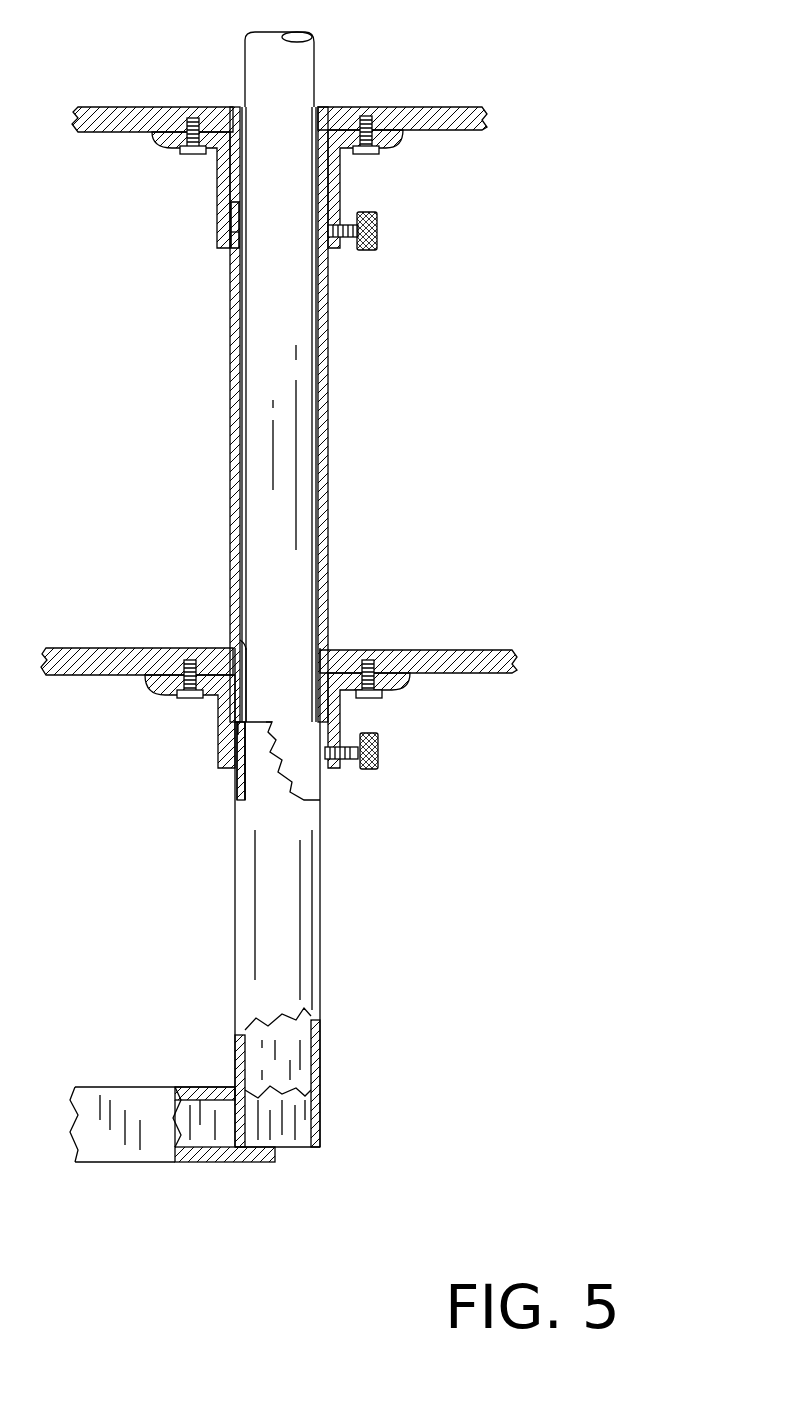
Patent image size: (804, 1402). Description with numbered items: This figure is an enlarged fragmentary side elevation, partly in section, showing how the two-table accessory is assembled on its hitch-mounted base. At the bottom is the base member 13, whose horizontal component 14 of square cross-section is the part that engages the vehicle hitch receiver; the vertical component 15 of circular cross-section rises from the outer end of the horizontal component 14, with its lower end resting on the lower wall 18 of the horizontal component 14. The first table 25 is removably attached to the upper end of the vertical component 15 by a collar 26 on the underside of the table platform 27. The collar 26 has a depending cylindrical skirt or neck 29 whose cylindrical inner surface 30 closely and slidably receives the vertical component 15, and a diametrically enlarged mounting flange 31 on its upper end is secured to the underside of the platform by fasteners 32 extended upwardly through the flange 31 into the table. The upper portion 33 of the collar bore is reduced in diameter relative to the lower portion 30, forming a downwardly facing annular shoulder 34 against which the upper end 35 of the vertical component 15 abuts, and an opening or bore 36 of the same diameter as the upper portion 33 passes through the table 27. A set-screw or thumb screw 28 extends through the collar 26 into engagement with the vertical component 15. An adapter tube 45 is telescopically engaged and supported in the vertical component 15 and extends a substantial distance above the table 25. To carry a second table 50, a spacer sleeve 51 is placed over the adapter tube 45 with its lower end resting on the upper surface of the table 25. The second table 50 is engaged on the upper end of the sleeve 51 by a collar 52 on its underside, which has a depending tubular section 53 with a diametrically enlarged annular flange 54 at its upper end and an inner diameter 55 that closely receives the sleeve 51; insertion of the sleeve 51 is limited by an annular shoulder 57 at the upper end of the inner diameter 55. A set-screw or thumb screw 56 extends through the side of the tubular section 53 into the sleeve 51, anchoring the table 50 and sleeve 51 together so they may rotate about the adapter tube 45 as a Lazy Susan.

The base member 13 is at (128, 1084).
The horizontal component 14 is at (148, 1155).
The vertical component 15 is at (332, 972).
The lower wall 18 is at (262, 1165).
The first table 25 is at (450, 636).
The collar 26 is at (350, 716).
The table platform 27 is at (105, 643).
The set-screw or thumb screw 28 is at (348, 770).
The cylindrical skirt or neck 29 is at (222, 725).
The cylindrical inner surface 30 is at (238, 800).
The mounting flange 31 is at (152, 690).
The fasteners 32 is at (185, 702).
The upper portion of the bore 33 is at (262, 640).
The annular shoulder 34 is at (246, 738).
The upper end of vertical component 35 is at (272, 720).
The opening or bore 36 is at (245, 640).
The adapter tube 45 is at (268, 470).
The second table 50 is at (452, 92).
The spacer sleeve 51 is at (330, 525).
The collar 52 is at (210, 175).
The depending tubular section 53 is at (340, 190).
The annular flange 54 is at (398, 143).
The inner diameter 55 is at (241, 226).
The set-screw or thumb screw 56 is at (372, 248).
The annular shoulder 57 is at (240, 208).